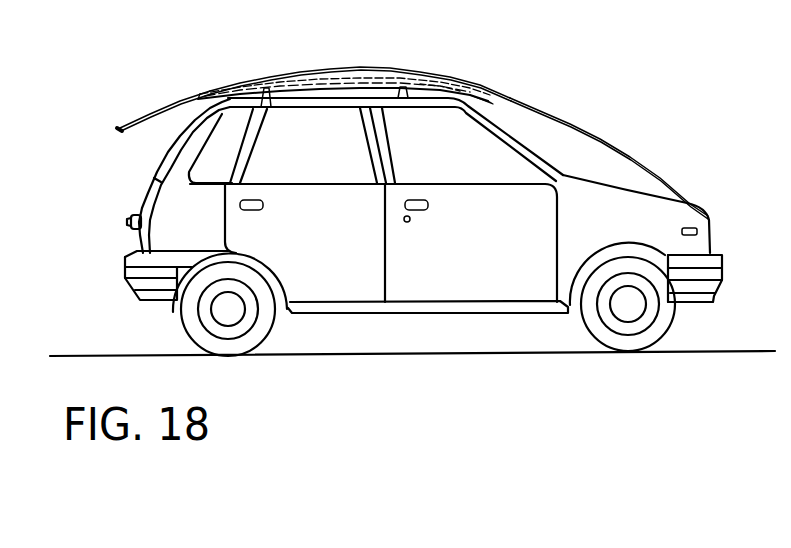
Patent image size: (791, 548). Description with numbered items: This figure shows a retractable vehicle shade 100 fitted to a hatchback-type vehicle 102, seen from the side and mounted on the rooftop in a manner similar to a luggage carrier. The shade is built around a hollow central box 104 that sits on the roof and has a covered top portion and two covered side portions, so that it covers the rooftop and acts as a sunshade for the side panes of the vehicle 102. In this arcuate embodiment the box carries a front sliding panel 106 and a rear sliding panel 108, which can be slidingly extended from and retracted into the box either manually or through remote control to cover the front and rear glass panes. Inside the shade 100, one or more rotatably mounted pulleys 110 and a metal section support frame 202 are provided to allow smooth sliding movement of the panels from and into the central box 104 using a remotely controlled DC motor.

The retractable vehicle shade 100 is at (280, 84).
The vehicle 102 is at (582, 206).
The hollow central box 104 is at (318, 73).
The front sliding panel 106 is at (633, 160).
The rear sliding panel 108 is at (128, 121).
The rotatably mounted pulley 110 is at (424, 77).
The metal section support frame 202 is at (366, 82).